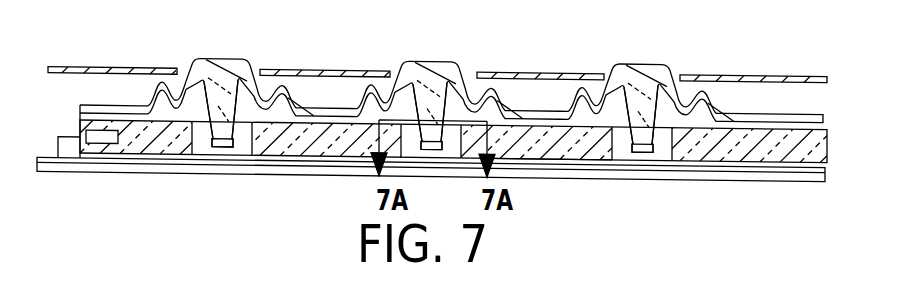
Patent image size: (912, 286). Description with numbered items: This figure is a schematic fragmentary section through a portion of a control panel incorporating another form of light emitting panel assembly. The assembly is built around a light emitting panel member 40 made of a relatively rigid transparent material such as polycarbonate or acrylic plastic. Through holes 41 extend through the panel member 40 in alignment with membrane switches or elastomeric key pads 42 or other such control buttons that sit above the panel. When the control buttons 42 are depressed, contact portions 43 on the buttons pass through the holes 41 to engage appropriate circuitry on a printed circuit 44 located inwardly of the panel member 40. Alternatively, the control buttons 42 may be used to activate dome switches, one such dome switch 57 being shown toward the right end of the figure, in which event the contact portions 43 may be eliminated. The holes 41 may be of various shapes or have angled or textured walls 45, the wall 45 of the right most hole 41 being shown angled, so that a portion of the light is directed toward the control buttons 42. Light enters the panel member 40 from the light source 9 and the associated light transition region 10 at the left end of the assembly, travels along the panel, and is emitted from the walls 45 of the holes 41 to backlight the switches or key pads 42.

The light source 9 is at (103, 140).
The light transition region 10 is at (117, 123).
The light emitting panel member 40 is at (297, 150).
The through holes 41 is at (217, 145).
The elastomeric key pads 42 is at (230, 63).
The contact portions 43 is at (250, 138).
The printed circuit 44 is at (345, 173).
The walls 45 is at (590, 155).
The dome switch 57 is at (636, 160).